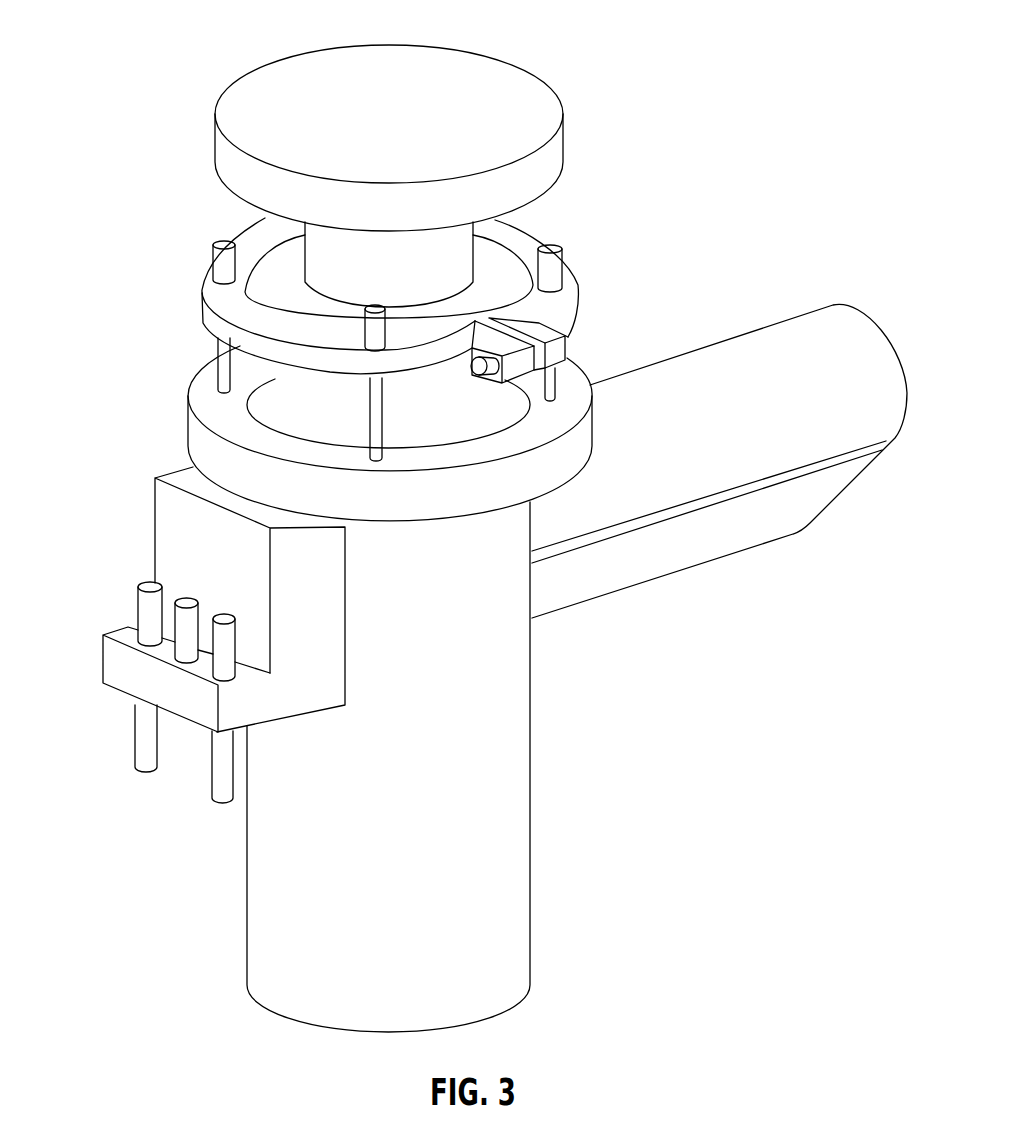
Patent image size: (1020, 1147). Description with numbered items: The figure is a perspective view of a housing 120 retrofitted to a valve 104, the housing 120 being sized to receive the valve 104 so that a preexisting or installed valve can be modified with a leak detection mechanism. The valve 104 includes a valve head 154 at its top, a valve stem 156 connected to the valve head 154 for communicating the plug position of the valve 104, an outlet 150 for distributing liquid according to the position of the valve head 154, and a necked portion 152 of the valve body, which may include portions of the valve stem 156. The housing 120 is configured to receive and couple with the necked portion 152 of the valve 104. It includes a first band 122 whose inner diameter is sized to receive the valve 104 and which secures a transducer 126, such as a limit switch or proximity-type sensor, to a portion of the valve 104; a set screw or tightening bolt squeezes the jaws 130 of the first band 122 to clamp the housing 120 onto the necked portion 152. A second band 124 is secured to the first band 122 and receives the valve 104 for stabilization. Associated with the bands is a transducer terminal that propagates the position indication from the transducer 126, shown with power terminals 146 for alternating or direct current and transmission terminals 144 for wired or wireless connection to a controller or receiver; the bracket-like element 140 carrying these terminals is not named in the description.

The valve 104 is at (577, 643).
The housing 120 is at (355, 363).
The first band 122 is at (435, 370).
The second band 124 is at (580, 474).
The transducer 126 is at (222, 243).
The jaws 130 is at (455, 368).
The bracket 140 is at (191, 653).
The transmission terminals 144 is at (225, 648).
The power terminals 146 is at (143, 760).
The outlet 150 is at (833, 323).
The necked portion 152 is at (533, 686).
The valve head 154 is at (495, 70).
The valve stem 156 is at (457, 262).